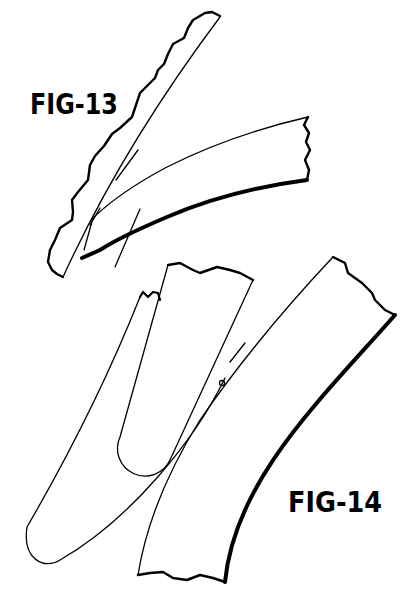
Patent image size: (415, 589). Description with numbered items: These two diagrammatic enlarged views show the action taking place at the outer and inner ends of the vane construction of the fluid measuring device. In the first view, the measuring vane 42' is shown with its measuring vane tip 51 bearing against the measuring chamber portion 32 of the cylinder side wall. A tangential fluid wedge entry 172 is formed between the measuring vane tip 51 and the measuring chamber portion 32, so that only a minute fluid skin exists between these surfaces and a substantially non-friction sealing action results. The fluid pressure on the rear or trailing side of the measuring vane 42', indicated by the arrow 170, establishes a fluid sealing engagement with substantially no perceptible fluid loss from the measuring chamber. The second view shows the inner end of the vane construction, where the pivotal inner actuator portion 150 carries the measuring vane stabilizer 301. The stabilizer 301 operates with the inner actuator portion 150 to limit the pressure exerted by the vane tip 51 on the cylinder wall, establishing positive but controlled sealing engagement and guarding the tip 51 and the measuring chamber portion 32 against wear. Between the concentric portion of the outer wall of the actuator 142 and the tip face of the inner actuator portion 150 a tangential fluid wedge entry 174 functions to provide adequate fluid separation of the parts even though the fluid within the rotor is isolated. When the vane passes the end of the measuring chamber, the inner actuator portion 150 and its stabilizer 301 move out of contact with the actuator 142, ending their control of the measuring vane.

In FIG. 13, the measuring chamber portion of the cylinder side wall 32 is at (148, 98).
In FIG. 13, the measuring vane 42' is at (196, 178).
In FIG. 13, the tangential fluid wedge entry 172 is at (127, 157).
In FIG. 13, the measuring vane tip 51 is at (93, 220).
In FIG. 13, the arrow 170 is at (114, 259).
In FIG. 14, the inner actuator portion 150 is at (180, 318).
In FIG. 14, the measuring vane stabilizer 301 is at (63, 467).
In FIG. 14, the actuator 142 is at (328, 355).
In FIG. 14, the tangential fluid wedge entry 174 is at (225, 383).